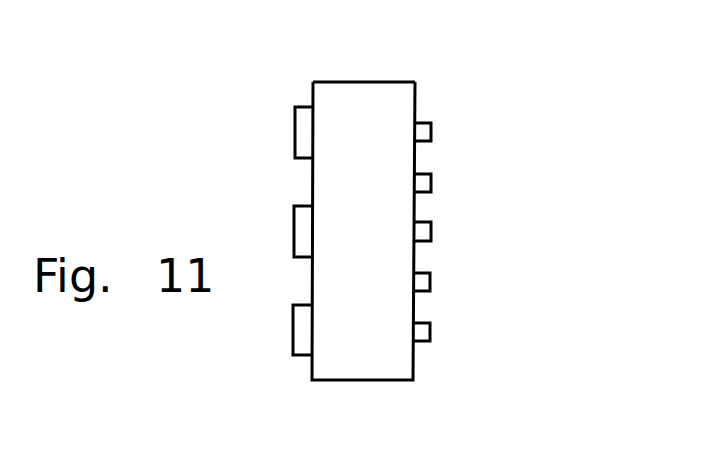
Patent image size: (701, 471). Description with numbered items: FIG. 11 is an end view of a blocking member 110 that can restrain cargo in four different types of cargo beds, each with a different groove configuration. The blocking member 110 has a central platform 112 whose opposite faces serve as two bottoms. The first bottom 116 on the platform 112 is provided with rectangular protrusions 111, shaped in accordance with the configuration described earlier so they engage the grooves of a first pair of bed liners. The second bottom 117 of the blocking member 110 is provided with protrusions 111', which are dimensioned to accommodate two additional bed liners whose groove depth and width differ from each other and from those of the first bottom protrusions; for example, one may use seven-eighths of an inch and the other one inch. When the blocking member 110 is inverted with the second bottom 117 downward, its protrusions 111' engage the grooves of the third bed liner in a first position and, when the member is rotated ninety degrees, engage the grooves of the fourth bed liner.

The blocking member 110 is at (419, 63).
The platform 112 is at (343, 83).
The second bottom 117 is at (227, 213).
The first bottom 116 is at (506, 206).
The rectangular protrusions 111 is at (484, 216).
The protrusions 111' is at (258, 218).